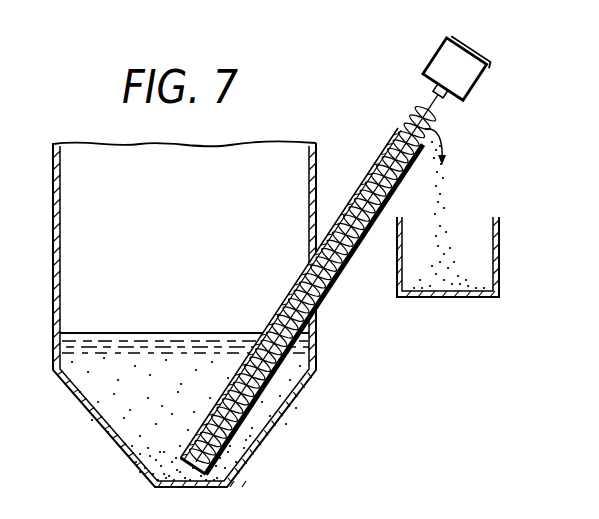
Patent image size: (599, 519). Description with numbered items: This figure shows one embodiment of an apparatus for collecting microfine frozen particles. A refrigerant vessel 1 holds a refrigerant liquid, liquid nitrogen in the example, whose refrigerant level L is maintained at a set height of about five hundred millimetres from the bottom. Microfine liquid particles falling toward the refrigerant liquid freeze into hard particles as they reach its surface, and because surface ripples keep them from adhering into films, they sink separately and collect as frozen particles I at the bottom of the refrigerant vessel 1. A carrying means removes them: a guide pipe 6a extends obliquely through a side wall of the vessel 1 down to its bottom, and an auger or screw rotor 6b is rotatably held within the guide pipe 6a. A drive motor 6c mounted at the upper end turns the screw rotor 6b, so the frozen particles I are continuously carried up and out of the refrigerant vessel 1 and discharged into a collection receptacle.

The refrigerant vessel 1 is at (318, 360).
The refrigerant level L is at (136, 341).
The frozen particles I is at (89, 470).
The guide pipe 6a is at (373, 162).
The screw rotor 6b is at (347, 263).
The drive motor 6c is at (472, 70).